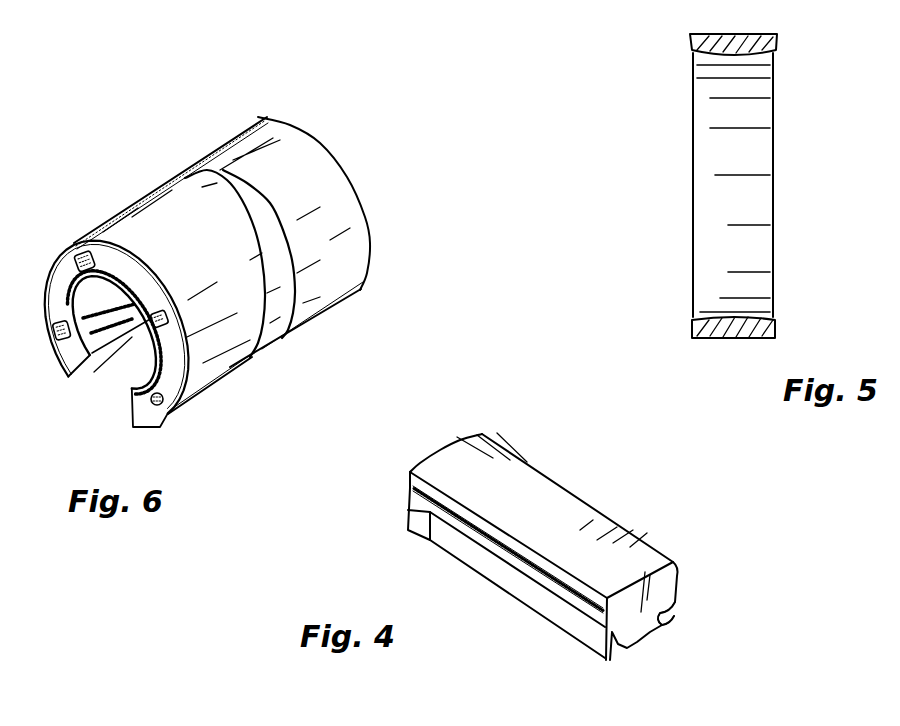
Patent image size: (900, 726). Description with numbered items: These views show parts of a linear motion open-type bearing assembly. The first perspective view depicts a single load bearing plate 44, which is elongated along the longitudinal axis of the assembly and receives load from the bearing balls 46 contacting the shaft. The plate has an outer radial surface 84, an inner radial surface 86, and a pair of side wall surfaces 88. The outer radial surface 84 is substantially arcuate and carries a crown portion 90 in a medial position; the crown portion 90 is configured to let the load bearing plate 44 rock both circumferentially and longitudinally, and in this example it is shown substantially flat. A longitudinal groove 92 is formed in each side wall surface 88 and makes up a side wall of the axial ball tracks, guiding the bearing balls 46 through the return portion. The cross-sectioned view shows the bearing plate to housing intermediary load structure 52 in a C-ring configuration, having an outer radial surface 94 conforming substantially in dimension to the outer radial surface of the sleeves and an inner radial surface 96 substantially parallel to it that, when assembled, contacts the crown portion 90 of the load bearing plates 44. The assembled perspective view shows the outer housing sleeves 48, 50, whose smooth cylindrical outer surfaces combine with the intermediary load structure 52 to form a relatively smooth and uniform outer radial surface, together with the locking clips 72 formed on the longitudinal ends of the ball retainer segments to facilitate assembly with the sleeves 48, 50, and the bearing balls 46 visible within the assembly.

In FIG. 4, the load bearing plate 44 is at (667, 547).
In FIG. 6, the bearing balls 46 is at (97, 375).
In FIG. 6, the outer housing sleeve 48 is at (253, 143).
In FIG. 6, the outer housing sleeve 50 is at (136, 216).
In FIG. 6, the bearing plate to housing intermediary load structure 52 is at (194, 184).
In FIG. 5, the bearing plate to housing intermediary load structure 52 is at (773, 185).
In FIG. 6, the locking clips 72 is at (72, 257).
In FIG. 4, the outer radial surface 84 is at (481, 453).
In FIG. 4, the inner radial surface 86 is at (640, 640).
In FIG. 4, the side wall surfaces 88 is at (483, 572).
In FIG. 4, the crown portion 90 is at (567, 470).
In FIG. 4, the longitudinal groove 92 is at (432, 517).
In FIG. 5, the outer radial surface 94 is at (695, 33).
In FIG. 5, the inner radial surface 96 is at (738, 58).